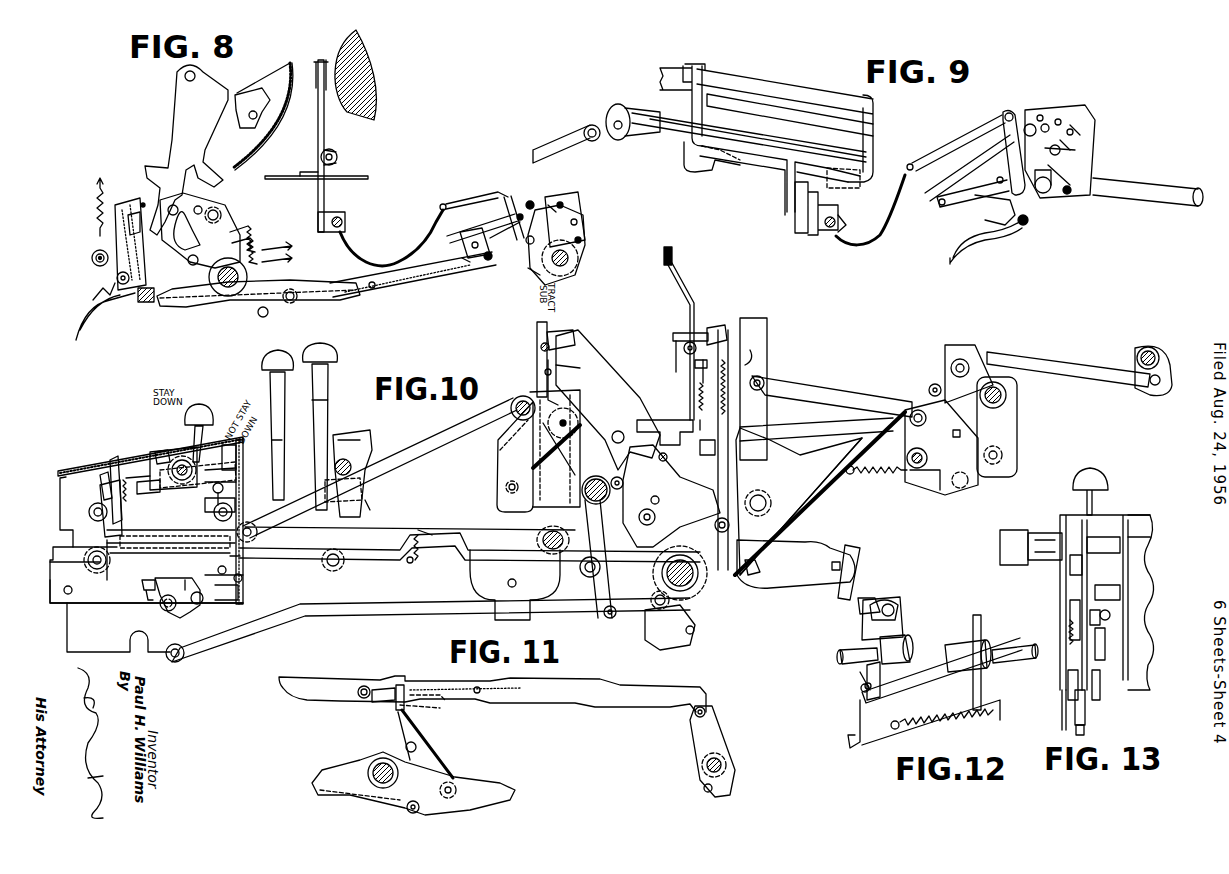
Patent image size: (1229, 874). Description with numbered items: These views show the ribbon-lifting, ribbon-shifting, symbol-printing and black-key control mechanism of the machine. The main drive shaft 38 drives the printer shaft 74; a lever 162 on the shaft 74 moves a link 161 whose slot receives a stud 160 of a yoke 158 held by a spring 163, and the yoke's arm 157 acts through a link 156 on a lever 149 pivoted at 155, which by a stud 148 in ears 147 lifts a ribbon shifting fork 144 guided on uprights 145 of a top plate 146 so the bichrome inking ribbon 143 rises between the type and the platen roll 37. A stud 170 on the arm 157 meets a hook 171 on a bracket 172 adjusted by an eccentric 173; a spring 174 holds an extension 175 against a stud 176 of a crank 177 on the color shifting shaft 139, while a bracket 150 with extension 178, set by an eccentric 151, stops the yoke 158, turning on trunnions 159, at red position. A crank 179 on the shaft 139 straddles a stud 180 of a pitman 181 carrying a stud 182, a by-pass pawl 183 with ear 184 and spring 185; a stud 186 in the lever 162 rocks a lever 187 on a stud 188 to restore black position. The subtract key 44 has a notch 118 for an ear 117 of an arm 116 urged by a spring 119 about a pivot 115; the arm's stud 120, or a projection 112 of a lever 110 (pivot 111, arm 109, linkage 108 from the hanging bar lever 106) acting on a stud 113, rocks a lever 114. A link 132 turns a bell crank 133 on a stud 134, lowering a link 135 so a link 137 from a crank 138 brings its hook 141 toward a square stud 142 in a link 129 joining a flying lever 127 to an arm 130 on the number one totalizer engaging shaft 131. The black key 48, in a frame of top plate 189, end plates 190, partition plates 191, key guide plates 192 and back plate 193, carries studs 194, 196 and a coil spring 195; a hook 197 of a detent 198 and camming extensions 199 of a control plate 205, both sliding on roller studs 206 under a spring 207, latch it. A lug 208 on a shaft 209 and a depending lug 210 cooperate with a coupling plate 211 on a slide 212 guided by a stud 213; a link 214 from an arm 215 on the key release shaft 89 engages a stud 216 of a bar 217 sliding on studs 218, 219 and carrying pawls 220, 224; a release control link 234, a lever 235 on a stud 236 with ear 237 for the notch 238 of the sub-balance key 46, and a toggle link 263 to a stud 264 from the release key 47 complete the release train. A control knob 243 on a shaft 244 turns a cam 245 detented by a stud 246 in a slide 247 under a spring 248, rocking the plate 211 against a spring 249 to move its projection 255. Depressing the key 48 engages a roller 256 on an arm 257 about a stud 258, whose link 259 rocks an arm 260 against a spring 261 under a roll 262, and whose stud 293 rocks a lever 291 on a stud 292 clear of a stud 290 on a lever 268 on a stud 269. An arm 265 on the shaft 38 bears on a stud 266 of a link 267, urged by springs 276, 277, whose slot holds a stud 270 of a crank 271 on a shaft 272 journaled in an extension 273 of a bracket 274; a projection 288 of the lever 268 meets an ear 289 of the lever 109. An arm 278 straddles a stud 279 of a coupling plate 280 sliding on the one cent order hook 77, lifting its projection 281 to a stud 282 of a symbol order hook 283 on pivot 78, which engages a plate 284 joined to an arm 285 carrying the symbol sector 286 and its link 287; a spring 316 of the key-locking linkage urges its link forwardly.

In FIG. 8, the platen roll 37 is at (360, 60).
In FIG. 10, the main drive shaft 38 is at (660, 572).
In FIG. 10, the subtract key 44 is at (537, 338).
In FIG. 10, the sub-balance key 46 is at (330, 350).
In FIG. 10, the release key 47 is at (286, 358).
In FIG. 10, the black key 48 is at (210, 407).
In FIG. 12, the black key 48 is at (983, 625).
In FIG. 13, the black key 48 is at (1090, 470).
In FIG. 8, the printer shaft 74 is at (246, 272).
In FIG. 11, the printer shaft 74 is at (372, 767).
In FIG. 8, the one cent order hook 77 is at (112, 307).
In FIG. 8, the pivot 78 is at (148, 304).
In FIG. 10, the key release shaft 89 is at (510, 406).
In FIG. 10, the hanging bar lever 106 is at (676, 256).
In FIG. 10, the yieldable linkage 108 is at (695, 418).
In FIG. 10, the arm 109 is at (662, 413).
In FIG. 10, the lever 110 is at (593, 387).
In FIG. 10, the pivot 111 is at (620, 432).
In FIG. 10, the projection 112 is at (555, 338).
In FIG. 10, the stud 113 is at (540, 348).
In FIG. 10, the lever 114 is at (552, 468).
In FIG. 10, the pivot 115 is at (570, 435).
In FIG. 10, the arm 116 is at (572, 408).
In FIG. 10, the bent-over ear 117 is at (585, 370).
In FIG. 10, the notch 118 is at (570, 345).
In FIG. 10, the spring 119 is at (545, 372).
In FIG. 10, the stud 120 is at (615, 488).
In FIG. 10, the flying lever 127 is at (805, 525).
In FIG. 10, the link 129 is at (860, 400).
In FIG. 10, the arm 130 is at (1017, 428).
In FIG. 10, the No. 1 totalizer engaging shaft 131 is at (1008, 395).
In FIG. 10, the link 132 is at (810, 440).
In FIG. 10, the bell crank 133 is at (925, 488).
In FIG. 10, the stud 134 is at (905, 480).
In FIG. 10, the link 135 is at (942, 360).
In FIG. 9, the link 137 is at (560, 145).
In FIG. 10, the link 137 is at (1028, 370).
In FIG. 9, the crank 138 is at (630, 135).
In FIG. 10, the crank 138 is at (1160, 393).
In FIG. 8, the color shifting shaft 139 is at (568, 262).
In FIG. 9, the color shifting shaft 139 is at (800, 142).
In FIG. 10, the color shifting shaft 139 is at (1138, 355).
In FIG. 11, the color shifting shaft 139 is at (728, 765).
In FIG. 10, the hook shaped forward end 141 is at (912, 410).
In FIG. 10, the square stud 142 is at (962, 450).
In FIG. 8, the bichrome inking ribbon 143 is at (322, 62).
In FIG. 9, the bichrome inking ribbon 143 is at (744, 78).
In FIG. 8, the ribbon shifting fork 144 is at (325, 125).
In FIG. 9, the ribbon shifting fork 144 is at (770, 172).
In FIG. 8, the uprights 145 is at (322, 146).
In FIG. 9, the uprights 145 is at (688, 163).
In FIG. 8, the top plate 146 is at (310, 182).
In FIG. 8, the right angled ears 147 is at (330, 213).
In FIG. 9, the right angled ears 147 is at (815, 205).
In FIG. 8, the stud 148 is at (346, 223).
In FIG. 9, the stud 148 is at (833, 240).
In FIG. 8, the lever 149 is at (395, 262).
In FIG. 9, the lever 149 is at (860, 246).
In FIG. 9, the bracket 150 is at (1018, 112).
In FIG. 9, the eccentric 151 is at (1043, 195).
In FIG. 8, the pivot 155 is at (440, 207).
In FIG. 9, the pivot 155 is at (935, 150).
In FIG. 8, the link 156 is at (522, 201).
In FIG. 9, the link 156 is at (998, 148).
In FIG. 8, the arm 157 is at (500, 232).
In FIG. 9, the arm 157 is at (958, 186).
In FIG. 8, the yoke 158 is at (462, 248).
In FIG. 9, the yoke 158 is at (980, 205).
In FIG. 8, the trunnions 159 is at (465, 265).
In FIG. 8, the stud 160 is at (488, 258).
In FIG. 9, the stud 160 is at (1025, 223).
In FIG. 8, the link 161 is at (418, 300).
In FIG. 9, the link 161 is at (963, 258).
In FIG. 8, the lever 162 is at (283, 286).
In FIG. 11, the lever 162 is at (378, 795).
In FIG. 8, the spring 163 is at (400, 292).
In FIG. 8, the stud 170 is at (522, 246).
In FIG. 8, the hook 171 is at (528, 250).
In FIG. 9, the hook 171 is at (1010, 118).
In FIG. 8, the bracket 172 is at (574, 212).
In FIG. 9, the bracket 172 is at (1040, 115).
In FIG. 9, the eccentric 173 is at (1070, 198).
In FIG. 8, the spring 174 is at (560, 205).
In FIG. 9, the spring 174 is at (1062, 120).
In FIG. 8, the extension 175 is at (552, 205).
In FIG. 9, the extension 175 is at (1075, 130).
In FIG. 8, the stud 176 is at (580, 226).
In FIG. 9, the stud 176 is at (1072, 145).
In FIG. 8, the crank 177 is at (582, 242).
In FIG. 9, the crank 177 is at (1082, 147).
In FIG. 8, the extension 178 is at (532, 265).
In FIG. 9, the extension 178 is at (1003, 183).
In FIG. 9, the crank 179 is at (1095, 165).
In FIG. 11, the crank 179 is at (722, 735).
In FIG. 11, the stud 180 is at (712, 712).
In FIG. 9, the pitman 181 is at (1075, 125).
In FIG. 11, the pitman 181 is at (645, 695).
In FIG. 11, the stud 182 is at (368, 688).
In FIG. 11, the by-pass pawl 183 is at (395, 705).
In FIG. 11, the bent-over ear 184 is at (398, 688).
In FIG. 11, the spring 185 is at (460, 686).
In FIG. 11, the stud 186 is at (452, 785).
In FIG. 11, the lever 187 is at (428, 758).
In FIG. 11, the stud 188 is at (405, 745).
In FIG. 10, the angular top plate 189 is at (118, 458).
In FIG. 10, the end plates 190 is at (68, 640).
In FIG. 13, the end plates 190 is at (1062, 710).
In FIG. 10, the partition plates 191 is at (66, 495).
In FIG. 13, the partition plates 191 is at (1078, 515).
In FIG. 10, the key guide plates 192 is at (50, 593).
In FIG. 13, the key guide plates 192 is at (1100, 680).
In FIG. 10, the back plate 193 is at (262, 582).
In FIG. 13, the back plate 193 is at (1138, 520).
In FIG. 10, the stud 194 is at (140, 586).
In FIG. 10, the coil spring 195 is at (240, 458).
In FIG. 10, the stud 196 is at (236, 470).
In FIG. 10, the hook-shaped projections 197 is at (236, 483).
In FIG. 10, the detent 198 is at (236, 512).
In FIG. 12, the detent 198 is at (865, 700).
In FIG. 13, the detent 198 is at (1120, 605).
In FIG. 10, the camming extensions 199 is at (182, 548).
In FIG. 10, the control plate 205 is at (243, 552).
In FIG. 12, the control plate 205 is at (860, 740).
In FIG. 13, the control plate 205 is at (1105, 628).
In FIG. 10, the studs 206 is at (93, 510).
In FIG. 10, the spring 207 is at (112, 550).
In FIG. 12, the spring 207 is at (930, 715).
In FIG. 13, the spring 207 is at (1110, 615).
In FIG. 10, the lug 208 is at (216, 472).
In FIG. 12, the lug 208 is at (955, 662).
In FIG. 10, the shaft 209 is at (234, 460).
In FIG. 12, the shaft 209 is at (972, 650).
In FIG. 12, the depending lug 210 is at (905, 650).
In FIG. 12, the coupling plate 211 is at (870, 636).
In FIG. 13, the coupling plate 211 is at (1080, 578).
In FIG. 12, the slide 212 is at (865, 680).
In FIG. 13, the slide 212 is at (1068, 620).
In FIG. 10, the stud 213 is at (112, 472).
In FIG. 12, the stud 213 is at (840, 656).
In FIG. 10, the link 214 is at (362, 505).
In FIG. 10, the arm 215 is at (506, 431).
In FIG. 10, the stud 216 is at (498, 496).
In FIG. 10, the bar 217 is at (400, 535).
In FIG. 10, the stud 218 is at (310, 508).
In FIG. 10, the stud 219 is at (560, 518).
In FIG. 10, the pawl 220 is at (652, 525).
In FIG. 10, the pawl 224 is at (662, 640).
In FIG. 10, the release control link 234 is at (485, 572).
In FIG. 10, the lever 235 is at (350, 480).
In FIG. 10, the stud 236 is at (352, 462).
In FIG. 10, the bent-over ear 237 is at (355, 440).
In FIG. 10, the notch 238 is at (340, 425).
In FIG. 10, the control knob 243 is at (165, 440).
In FIG. 13, the control knob 243 is at (1000, 543).
In FIG. 10, the short shaft 244 is at (190, 460).
In FIG. 13, the short shaft 244 is at (1100, 540).
In FIG. 10, the cam 245 is at (150, 490).
In FIG. 12, the cam 245 is at (882, 605).
In FIG. 13, the cam 245 is at (1075, 565).
In FIG. 10, the stud 246 is at (236, 445).
In FIG. 12, the stud 246 is at (897, 612).
In FIG. 10, the slide 247 is at (160, 450).
In FIG. 12, the slide 247 is at (862, 600).
In FIG. 10, the spring 248 is at (150, 480).
In FIG. 12, the spring 248 is at (848, 590).
In FIG. 10, the spring 249 is at (105, 498).
In FIG. 13, the spring 249 is at (1068, 639).
In FIG. 12, the projection 255 is at (870, 688).
In FIG. 10, the roller 256 is at (240, 590).
In FIG. 10, the arm 257 is at (165, 652).
In FIG. 13, the arm 257 is at (1088, 705).
In FIG. 10, the stud 258 is at (160, 612).
In FIG. 13, the stud 258 is at (1070, 690).
In FIG. 10, the link 259 is at (345, 612).
In FIG. 13, the link 259 is at (1085, 733).
In FIG. 10, the arm 260 is at (958, 437).
In FIG. 10, the spring 261 is at (860, 480).
In FIG. 10, the roll 262 is at (928, 385).
In FIG. 10, the toggle link 263 is at (332, 570).
In FIG. 10, the stud 264 is at (400, 565).
In FIG. 10, the arm 265 is at (690, 640).
In FIG. 10, the stud 266 is at (757, 578).
In FIG. 10, the link 267 is at (785, 470).
In FIG. 10, the lever 268 is at (715, 510).
In FIG. 10, the stud 269 is at (660, 503).
In FIG. 10, the stud 270 is at (757, 375).
In FIG. 10, the crank 271 is at (700, 370).
In FIG. 8, the shaft 272 is at (93, 258).
In FIG. 10, the shaft 272 is at (684, 348).
In FIG. 10, the extension 273 is at (708, 340).
In FIG. 10, the bracket 274 is at (675, 334).
In FIG. 10, the spring 276 is at (762, 368).
In FIG. 10, the spring 277 is at (752, 340).
In FIG. 8, the arm 278 is at (115, 275).
In FIG. 8, the stud 279 is at (112, 278).
In FIG. 8, the coupling plate 280 is at (112, 248).
In FIG. 8, the projection 281 is at (130, 218).
In FIG. 8, the stud 282 is at (141, 203).
In FIG. 8, the symbol order hook 283 is at (145, 190).
In FIG. 8, the plate 284 is at (187, 202).
In FIG. 8, the arm 285 is at (180, 138).
In FIG. 8, the symbol sector 286 is at (270, 80).
In FIG. 8, the link 287 is at (228, 182).
In FIG. 10, the projection 288 is at (712, 480).
In FIG. 10, the bent-over ear 289 is at (690, 468).
In FIG. 10, the stud 290 is at (584, 486).
In FIG. 10, the lever 291 is at (655, 592).
In FIG. 10, the stud 292 is at (590, 575).
In FIG. 10, the stud 293 is at (612, 622).
In FIG. 10, the spring 316 is at (236, 498).
In FIG. 12, the spring 316 is at (1015, 650).